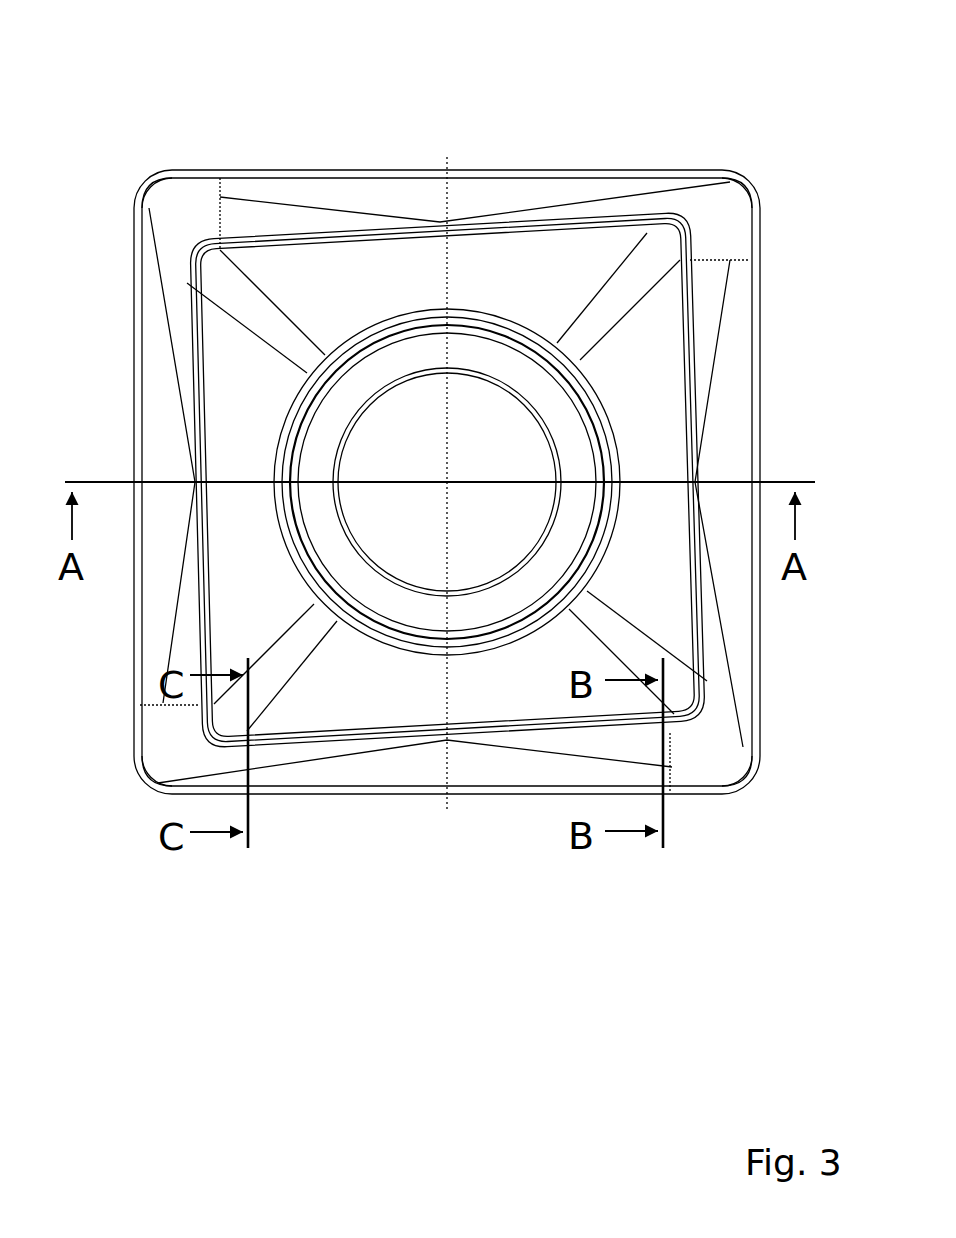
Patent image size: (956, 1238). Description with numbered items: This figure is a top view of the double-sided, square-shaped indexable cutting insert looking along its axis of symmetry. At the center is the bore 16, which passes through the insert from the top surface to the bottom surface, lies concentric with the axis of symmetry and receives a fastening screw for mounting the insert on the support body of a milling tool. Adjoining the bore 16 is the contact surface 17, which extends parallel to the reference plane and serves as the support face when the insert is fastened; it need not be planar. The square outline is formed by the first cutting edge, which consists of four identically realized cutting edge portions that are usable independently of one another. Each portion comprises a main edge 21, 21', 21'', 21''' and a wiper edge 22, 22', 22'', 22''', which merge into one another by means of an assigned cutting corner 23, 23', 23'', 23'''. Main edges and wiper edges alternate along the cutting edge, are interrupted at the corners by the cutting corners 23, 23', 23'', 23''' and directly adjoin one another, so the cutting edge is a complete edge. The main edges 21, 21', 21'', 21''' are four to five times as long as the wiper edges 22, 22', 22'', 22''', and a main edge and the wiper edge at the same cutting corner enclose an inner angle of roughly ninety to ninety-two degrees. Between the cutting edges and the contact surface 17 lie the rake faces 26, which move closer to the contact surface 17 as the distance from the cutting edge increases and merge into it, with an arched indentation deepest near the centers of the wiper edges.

The bore 16 is at (433, 398).
The contact surface 17 is at (243, 378).
The main edge 21 is at (476, 547).
The main edge 21' is at (383, 861).
The main edge 21'' is at (111, 447).
The main edge 21''' is at (475, 135).
The wiper edge 22 is at (638, 772).
The wiper edge 22' is at (193, 704).
The wiper edge 22'' is at (256, 201).
The wiper edge 22''' is at (768, 413).
The cutting corner 23 is at (733, 854).
The cutting corner 23' is at (116, 853).
The cutting corner 23'' is at (122, 131).
The cutting corner 23''' is at (669, 193).
The rake face 26 is at (513, 205).